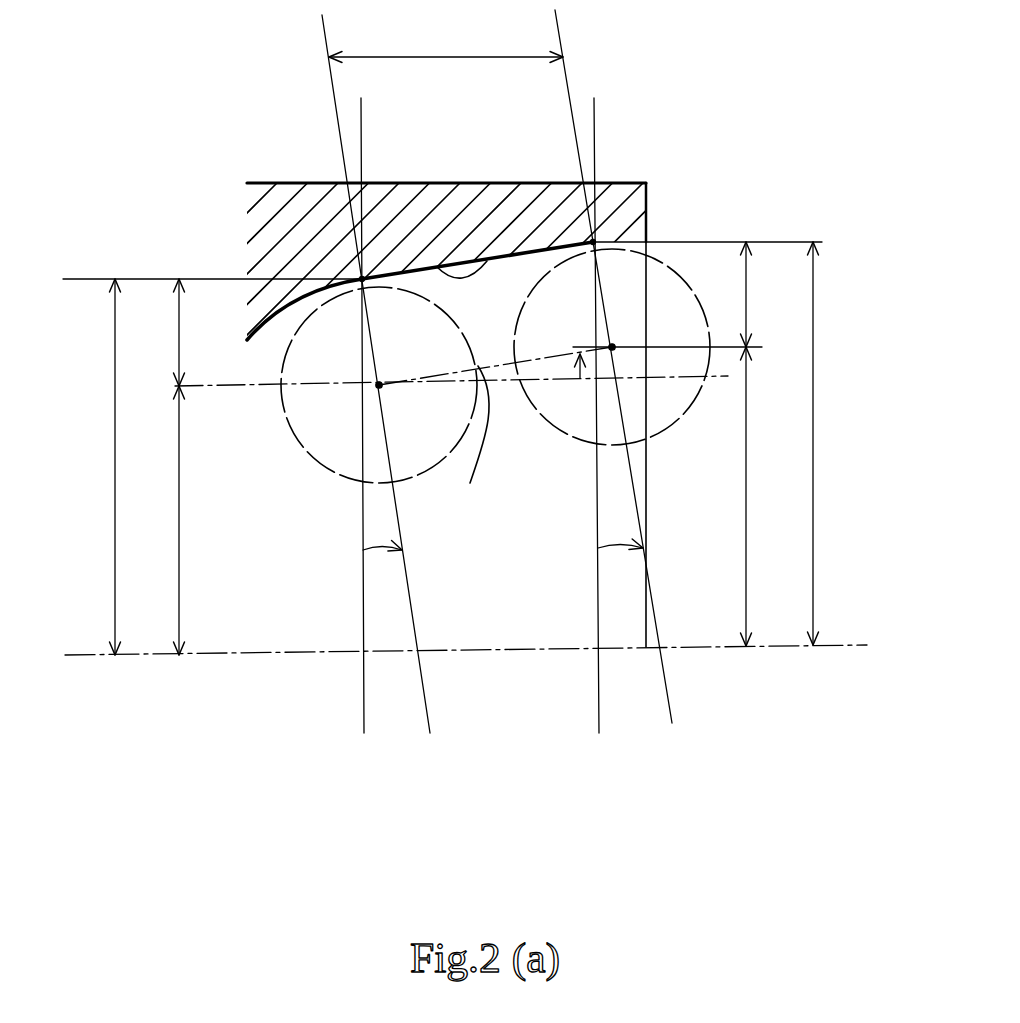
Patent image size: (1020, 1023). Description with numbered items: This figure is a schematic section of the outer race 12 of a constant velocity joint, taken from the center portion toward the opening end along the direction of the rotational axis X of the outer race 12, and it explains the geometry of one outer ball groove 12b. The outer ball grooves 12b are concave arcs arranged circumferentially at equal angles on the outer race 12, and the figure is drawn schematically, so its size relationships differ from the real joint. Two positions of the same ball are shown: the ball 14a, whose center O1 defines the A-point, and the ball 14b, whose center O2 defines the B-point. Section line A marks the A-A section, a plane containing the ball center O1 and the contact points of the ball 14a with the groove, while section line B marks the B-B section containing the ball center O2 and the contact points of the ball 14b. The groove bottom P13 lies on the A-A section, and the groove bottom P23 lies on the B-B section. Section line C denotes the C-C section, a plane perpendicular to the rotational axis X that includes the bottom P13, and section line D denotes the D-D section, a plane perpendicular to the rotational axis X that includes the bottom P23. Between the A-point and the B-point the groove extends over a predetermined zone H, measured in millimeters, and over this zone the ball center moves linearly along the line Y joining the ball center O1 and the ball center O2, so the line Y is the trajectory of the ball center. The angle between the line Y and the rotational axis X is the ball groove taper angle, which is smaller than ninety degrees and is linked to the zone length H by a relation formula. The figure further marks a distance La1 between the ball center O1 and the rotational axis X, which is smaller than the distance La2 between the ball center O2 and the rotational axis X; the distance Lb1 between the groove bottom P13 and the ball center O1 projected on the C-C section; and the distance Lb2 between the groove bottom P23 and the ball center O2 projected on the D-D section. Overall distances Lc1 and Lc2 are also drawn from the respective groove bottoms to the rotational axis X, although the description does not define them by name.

The outer race 12 is at (647, 192).
The outer ball groove 12b is at (362, 277).
The ball 14a is at (311, 456).
The ball 14b is at (567, 437).
The ball groove bottom P13 is at (362, 277).
The ball groove bottom P23 is at (643, 175).
The ball center O1 is at (451, 366).
The ball center O2 is at (570, 349).
The A-A section A is at (332, 78).
The B-B section B is at (567, 78).
The C-C section C is at (362, 110).
The D-D section D is at (595, 110).
The predetermined zone H is at (446, 49).
The rotational axis X is at (855, 645).
The line Y is at (474, 443).
The distance La1 is at (152, 520).
The distance Lb1 is at (149, 332).
The total distance from contact point P13 to axis Lc1 is at (85, 467).
The distance La2 is at (775, 496).
The distance Lb2 is at (773, 294).
The total distance from contact point P23 to axis Lc2 is at (844, 443).